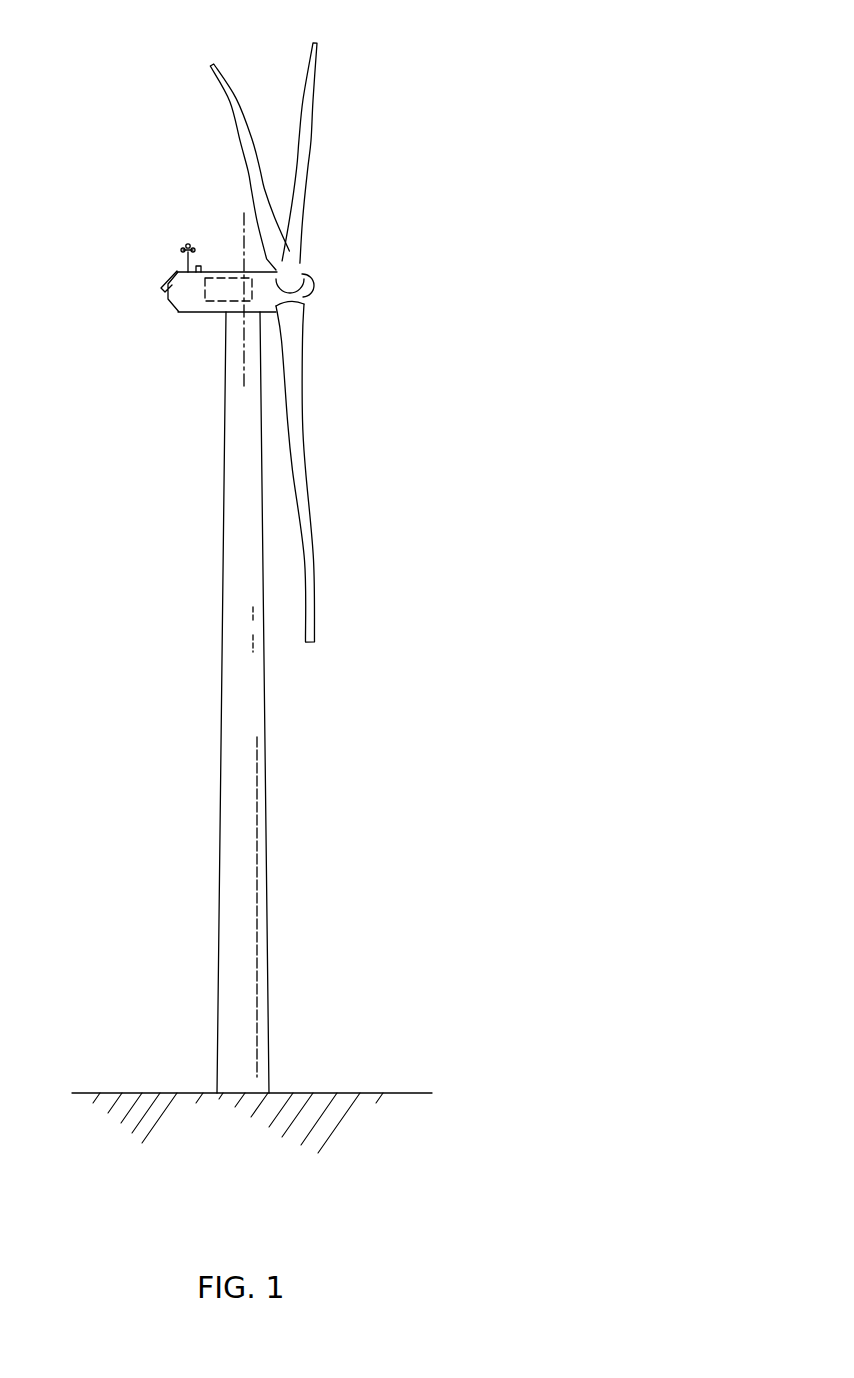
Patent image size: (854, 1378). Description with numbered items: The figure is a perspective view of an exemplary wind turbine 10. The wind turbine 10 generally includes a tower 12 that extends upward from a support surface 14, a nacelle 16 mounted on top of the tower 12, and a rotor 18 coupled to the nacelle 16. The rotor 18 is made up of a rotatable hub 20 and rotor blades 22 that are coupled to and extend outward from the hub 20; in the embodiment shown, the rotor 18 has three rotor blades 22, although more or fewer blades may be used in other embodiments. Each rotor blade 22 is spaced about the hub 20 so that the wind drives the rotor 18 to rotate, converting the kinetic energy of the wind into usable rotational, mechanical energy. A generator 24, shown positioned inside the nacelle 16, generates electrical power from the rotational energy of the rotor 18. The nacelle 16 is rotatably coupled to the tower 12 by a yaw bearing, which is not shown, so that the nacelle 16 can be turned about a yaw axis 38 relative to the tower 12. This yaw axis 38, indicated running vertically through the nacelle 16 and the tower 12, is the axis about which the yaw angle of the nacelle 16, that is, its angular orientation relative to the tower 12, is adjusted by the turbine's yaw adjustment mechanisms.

The wind turbine 10 is at (593, 106).
The tower 12 is at (230, 812).
The support surface 14 is at (152, 1092).
The nacelle 16 is at (203, 310).
The rotor 18 is at (305, 341).
The rotatable hub 20 is at (312, 288).
The rotor blade 22 is at (311, 80).
The generator 24 is at (227, 278).
The yaw axis 38 is at (242, 372).